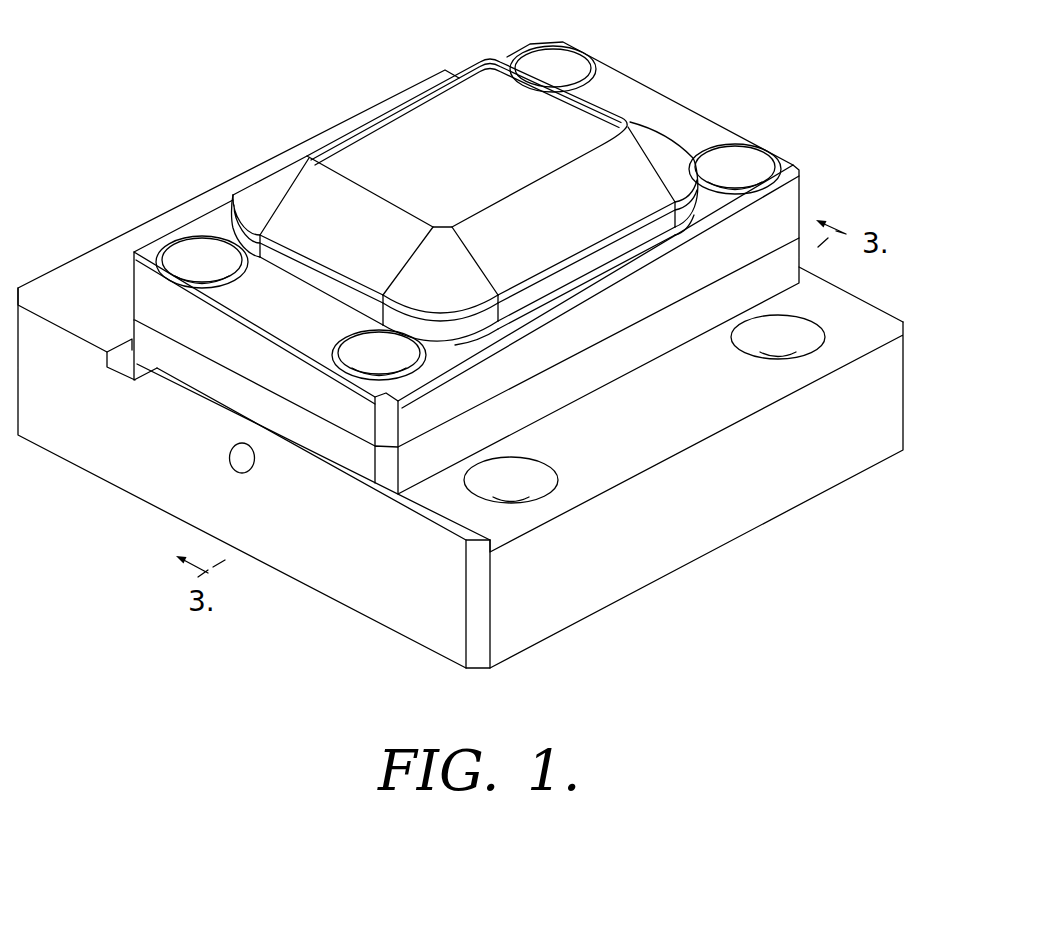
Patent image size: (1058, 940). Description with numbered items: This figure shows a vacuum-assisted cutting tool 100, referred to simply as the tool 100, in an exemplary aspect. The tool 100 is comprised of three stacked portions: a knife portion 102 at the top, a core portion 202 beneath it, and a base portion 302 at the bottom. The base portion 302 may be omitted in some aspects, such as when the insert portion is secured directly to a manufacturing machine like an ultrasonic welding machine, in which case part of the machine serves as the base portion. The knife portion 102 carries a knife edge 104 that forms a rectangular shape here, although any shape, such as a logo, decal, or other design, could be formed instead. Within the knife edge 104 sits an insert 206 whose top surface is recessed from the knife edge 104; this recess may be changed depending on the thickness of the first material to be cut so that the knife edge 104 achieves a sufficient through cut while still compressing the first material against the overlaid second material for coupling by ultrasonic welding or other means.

The vacuum-assisted cutting tool 100 is at (118, 107).
The knife portion 102 is at (718, 128).
The knife edge 104 is at (495, 54).
The core portion 202 is at (774, 282).
The insert 206 is at (428, 107).
The base portion 302 is at (862, 435).